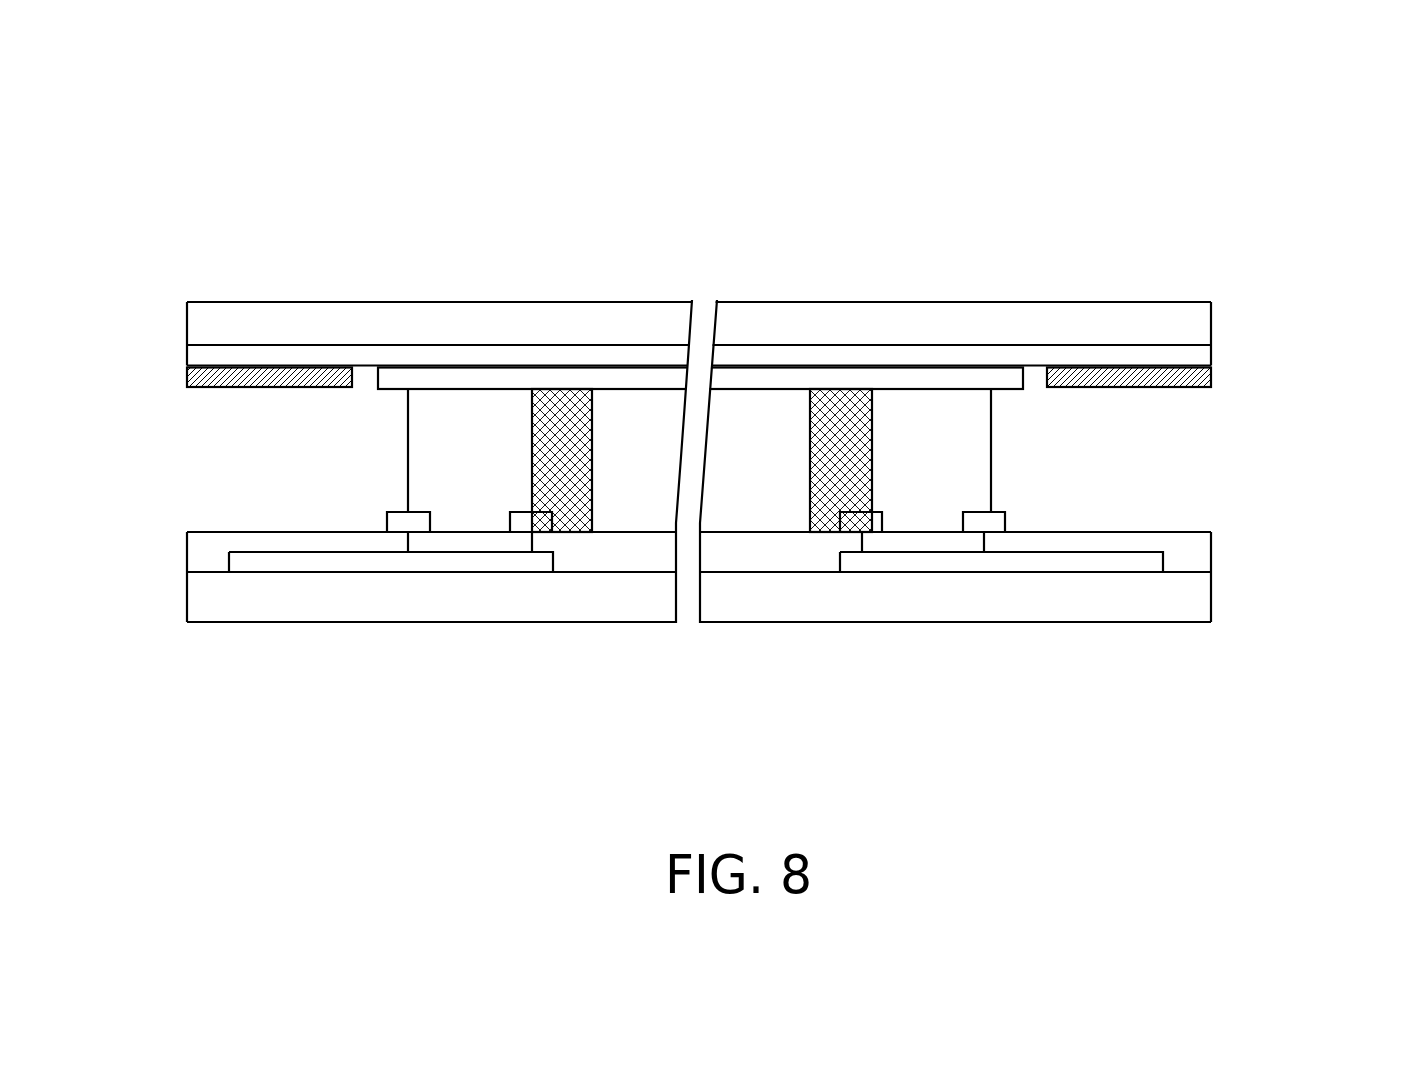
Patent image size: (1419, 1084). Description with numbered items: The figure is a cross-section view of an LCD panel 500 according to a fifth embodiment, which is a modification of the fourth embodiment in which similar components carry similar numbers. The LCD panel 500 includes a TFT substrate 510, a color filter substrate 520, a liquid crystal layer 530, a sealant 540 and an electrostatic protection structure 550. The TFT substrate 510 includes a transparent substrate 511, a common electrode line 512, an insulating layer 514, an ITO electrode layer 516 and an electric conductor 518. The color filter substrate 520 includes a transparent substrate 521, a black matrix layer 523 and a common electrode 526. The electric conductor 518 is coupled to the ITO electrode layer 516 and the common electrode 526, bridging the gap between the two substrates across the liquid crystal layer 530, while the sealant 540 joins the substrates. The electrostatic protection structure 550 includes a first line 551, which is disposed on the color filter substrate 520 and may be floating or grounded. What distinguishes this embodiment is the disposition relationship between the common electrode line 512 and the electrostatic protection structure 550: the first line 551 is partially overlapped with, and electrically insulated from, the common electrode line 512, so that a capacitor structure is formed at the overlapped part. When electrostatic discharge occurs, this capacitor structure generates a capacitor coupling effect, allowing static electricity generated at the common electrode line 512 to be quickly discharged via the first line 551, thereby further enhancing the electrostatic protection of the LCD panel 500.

The LCD panel 500 is at (1360, 146).
The TFT substrate 510 is at (707, 611).
The transparent substrate 511 is at (1182, 609).
The common electrode line 512 is at (948, 567).
The insulating layer 514 is at (1195, 559).
The ITO electrode layer 516 is at (870, 540).
The electric conductor 518 is at (960, 453).
The color filter substrate 520 is at (749, 311).
The transparent substrate 521 is at (1168, 315).
The black matrix layer 523 is at (1188, 353).
The common electrode 526 is at (995, 380).
The liquid crystal layer 530 is at (755, 405).
The sealant 540 is at (847, 405).
The electrostatic protection structure 550 is at (795, 393).
The first line 551 is at (1208, 373).